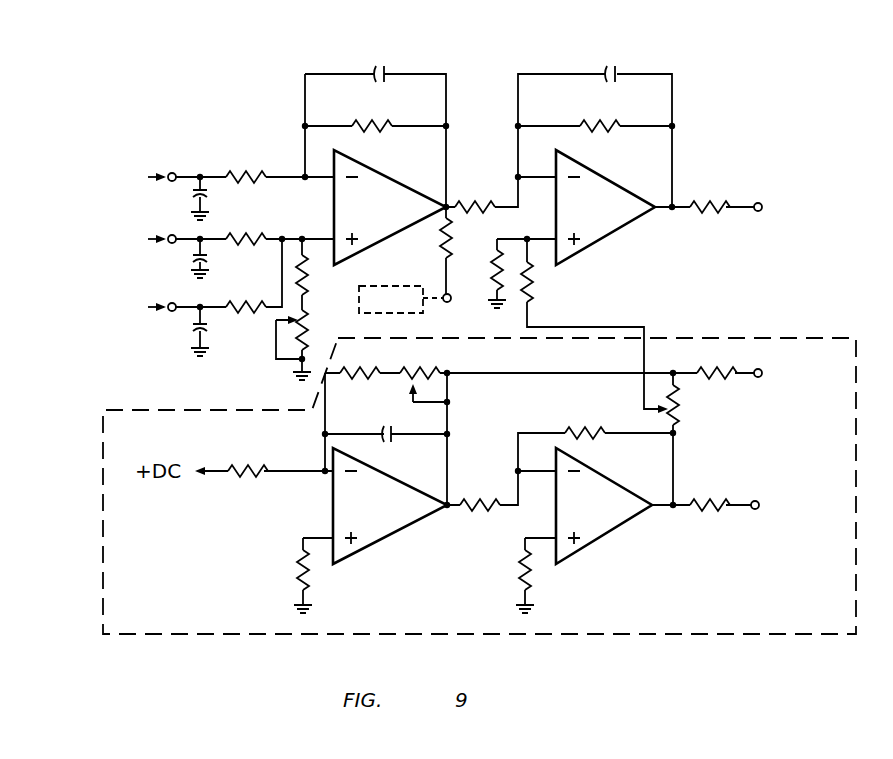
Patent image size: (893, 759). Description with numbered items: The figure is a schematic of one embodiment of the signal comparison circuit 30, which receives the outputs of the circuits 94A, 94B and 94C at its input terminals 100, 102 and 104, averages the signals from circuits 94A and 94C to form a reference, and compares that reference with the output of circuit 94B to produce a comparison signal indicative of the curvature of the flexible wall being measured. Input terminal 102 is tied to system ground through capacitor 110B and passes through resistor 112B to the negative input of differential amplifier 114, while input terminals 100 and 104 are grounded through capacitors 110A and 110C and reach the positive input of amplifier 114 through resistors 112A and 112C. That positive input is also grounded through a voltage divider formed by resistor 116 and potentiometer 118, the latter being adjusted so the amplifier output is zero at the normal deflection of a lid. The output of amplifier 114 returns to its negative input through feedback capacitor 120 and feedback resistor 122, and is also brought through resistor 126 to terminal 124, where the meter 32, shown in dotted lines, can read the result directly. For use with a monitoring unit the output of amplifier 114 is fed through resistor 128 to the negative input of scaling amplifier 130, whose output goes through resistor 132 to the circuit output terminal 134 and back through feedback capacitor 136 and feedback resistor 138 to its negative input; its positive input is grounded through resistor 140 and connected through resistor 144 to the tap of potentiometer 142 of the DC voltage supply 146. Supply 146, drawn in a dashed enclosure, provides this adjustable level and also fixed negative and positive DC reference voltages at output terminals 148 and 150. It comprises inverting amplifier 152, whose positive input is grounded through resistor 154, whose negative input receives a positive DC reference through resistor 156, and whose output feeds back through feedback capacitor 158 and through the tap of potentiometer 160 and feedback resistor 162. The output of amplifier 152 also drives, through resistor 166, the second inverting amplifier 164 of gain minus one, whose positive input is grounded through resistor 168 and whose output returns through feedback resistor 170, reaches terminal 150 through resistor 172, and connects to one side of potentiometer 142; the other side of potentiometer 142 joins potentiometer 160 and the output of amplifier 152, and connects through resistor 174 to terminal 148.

The comparison circuit 30 is at (243, 118).
The meter 32 is at (402, 310).
The circuit 94A is at (99, 231).
The circuit 94B is at (99, 169).
The circuit 94C is at (99, 299).
The input terminal 100 is at (175, 234).
The input terminal 102 is at (178, 173).
The input terminal 104 is at (175, 302).
The capacitor 110A is at (208, 258).
The capacitor 110B is at (208, 194).
The capacitor 110C is at (207, 328).
The resistor 112A is at (262, 236).
The resistor 112B is at (263, 143).
The resistor 112C is at (258, 303).
The differential amplifier 114 is at (369, 170).
The resistor 116 is at (306, 266).
The potentiometer 118 is at (306, 348).
The feedback capacitor 120 is at (380, 70).
The feedback resistor 122 is at (384, 122).
The terminal 124 is at (443, 294).
The resistor 126 is at (451, 240).
The resistor 128 is at (490, 200).
The scaling amplifier 130 is at (600, 170).
The resistor 132 is at (694, 200).
The circuit output terminal 134 is at (762, 203).
The feedback capacitor 136 is at (614, 70).
The feedback resistor 138 is at (613, 122).
The resistor 140 is at (492, 262).
The potentiometer 142 is at (681, 416).
The resistor 144 is at (534, 284).
The DC voltage supply 146 is at (855, 335).
The negative DC reference voltage output terminal 148 is at (762, 377).
The positive DC reference voltage output terminal 150 is at (759, 502).
The inverting amplifier 152 is at (370, 473).
The resistor 154 is at (300, 553).
The resistor 156 is at (234, 466).
The feedback capacitor 158 is at (386, 428).
The potentiometer 160 is at (438, 370).
The feedback resistor 162 is at (364, 370).
The second inverting amplifier 164 is at (603, 473).
The resistor 166 is at (493, 500).
The resistor 168 is at (521, 553).
The feedback resistor 170 is at (585, 430).
The resistor 172 is at (700, 500).
The resistor 174 is at (702, 369).